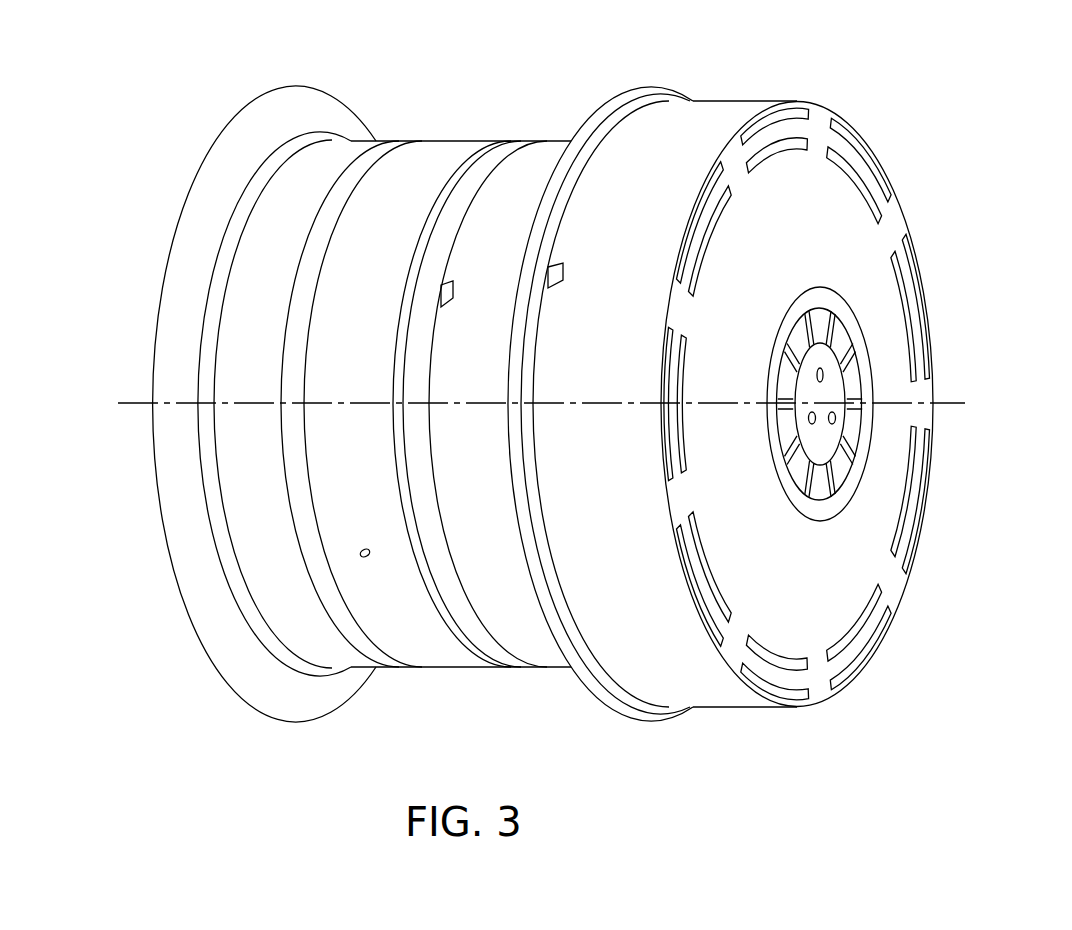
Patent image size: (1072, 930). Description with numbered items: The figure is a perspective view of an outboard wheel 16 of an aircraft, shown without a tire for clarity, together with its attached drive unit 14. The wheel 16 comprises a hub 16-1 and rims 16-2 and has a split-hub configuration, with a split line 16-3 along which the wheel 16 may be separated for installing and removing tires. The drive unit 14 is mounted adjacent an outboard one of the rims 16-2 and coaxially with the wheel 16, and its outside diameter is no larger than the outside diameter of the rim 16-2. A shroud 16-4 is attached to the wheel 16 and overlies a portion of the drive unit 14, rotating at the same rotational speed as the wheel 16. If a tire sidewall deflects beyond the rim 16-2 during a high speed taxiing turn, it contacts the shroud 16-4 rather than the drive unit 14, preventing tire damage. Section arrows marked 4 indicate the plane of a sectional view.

The drive unit 14 is at (868, 237).
The wheel 16 is at (433, 385).
The hub 16-1 is at (427, 667).
The rims 16-2 is at (155, 466).
The split line 16-3 is at (508, 662).
The shroud 16-4 is at (737, 101).
The section line 4- 4 is at (53, 402).